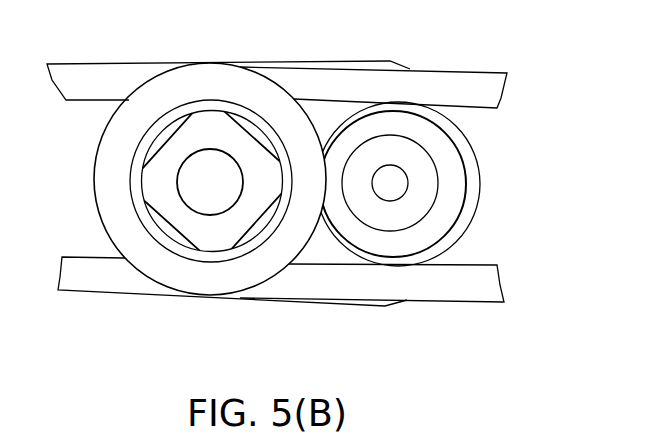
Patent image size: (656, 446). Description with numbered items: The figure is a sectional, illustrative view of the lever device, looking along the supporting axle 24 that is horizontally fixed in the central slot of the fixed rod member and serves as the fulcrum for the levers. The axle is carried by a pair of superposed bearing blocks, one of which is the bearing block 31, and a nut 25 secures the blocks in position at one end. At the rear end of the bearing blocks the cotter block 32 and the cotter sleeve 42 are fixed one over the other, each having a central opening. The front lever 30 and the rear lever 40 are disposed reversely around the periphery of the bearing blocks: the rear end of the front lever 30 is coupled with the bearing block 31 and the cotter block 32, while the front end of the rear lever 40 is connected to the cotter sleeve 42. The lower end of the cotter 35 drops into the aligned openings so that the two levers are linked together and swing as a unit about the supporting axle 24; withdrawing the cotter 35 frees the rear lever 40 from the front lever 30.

The supporting axle 24 is at (187, 182).
The nut 25 is at (167, 208).
The front lever 30 is at (103, 75).
The bearing block 31 is at (195, 280).
The cotter block 32 is at (462, 238).
The cotter 35 is at (393, 190).
The rear lever 40 is at (468, 87).
The cotter sleeve 42 is at (462, 168).